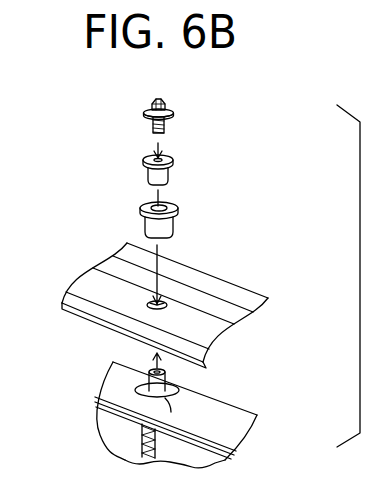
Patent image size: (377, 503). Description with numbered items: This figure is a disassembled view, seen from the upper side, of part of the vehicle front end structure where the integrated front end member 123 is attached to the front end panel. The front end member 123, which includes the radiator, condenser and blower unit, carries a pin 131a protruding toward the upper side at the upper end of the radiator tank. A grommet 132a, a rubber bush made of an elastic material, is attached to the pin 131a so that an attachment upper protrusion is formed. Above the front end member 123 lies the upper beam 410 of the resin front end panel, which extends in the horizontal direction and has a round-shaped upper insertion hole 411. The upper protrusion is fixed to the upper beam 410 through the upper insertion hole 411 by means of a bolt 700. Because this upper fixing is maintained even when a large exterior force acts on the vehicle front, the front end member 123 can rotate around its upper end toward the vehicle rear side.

The bolt 700 is at (174, 112).
The grommet 132a is at (178, 210).
The upper insertion hole 411 is at (172, 297).
The upper beam 410 is at (247, 290).
The pin 131a is at (165, 375).
The front end member 123 is at (218, 407).